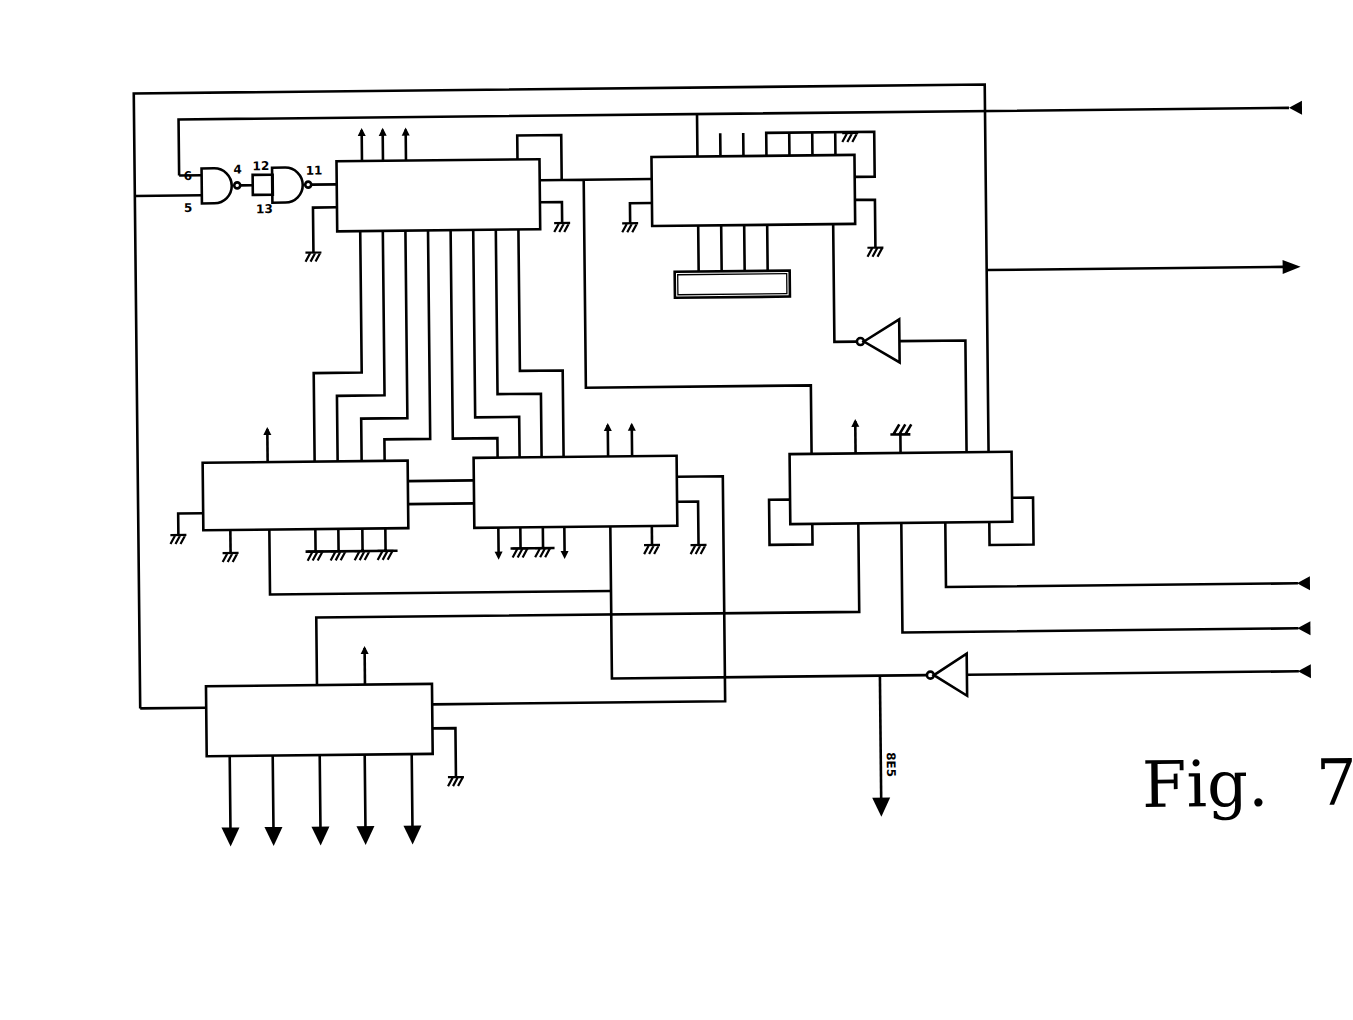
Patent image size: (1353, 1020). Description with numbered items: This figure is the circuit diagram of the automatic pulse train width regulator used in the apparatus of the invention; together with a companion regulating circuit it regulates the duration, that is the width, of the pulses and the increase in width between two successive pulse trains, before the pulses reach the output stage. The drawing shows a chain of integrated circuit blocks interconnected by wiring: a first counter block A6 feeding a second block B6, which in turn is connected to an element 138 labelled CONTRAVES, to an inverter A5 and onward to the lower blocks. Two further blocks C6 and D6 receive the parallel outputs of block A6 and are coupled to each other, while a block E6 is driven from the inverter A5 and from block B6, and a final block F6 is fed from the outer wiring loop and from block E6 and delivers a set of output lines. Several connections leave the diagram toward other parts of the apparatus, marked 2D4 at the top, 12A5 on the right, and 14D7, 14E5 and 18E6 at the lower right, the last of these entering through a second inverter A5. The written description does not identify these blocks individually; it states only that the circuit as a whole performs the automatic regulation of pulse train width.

The CONTRAVES switch unit 138 is at (725, 276).
The counter A6 (CD40103) A6 is at (438, 195).
The counter B6 (CD40103) B6 is at (748, 182).
The counter C6 (CD40193) C6 is at (291, 488).
The counter D6 (CD40193) D6 is at (593, 479).
The counter E6 (CD4518) E6 is at (921, 471).
The decade counter F6 (CD4017) F6 is at (319, 712).
The inverter A5 is at (918, 503).
The connection to 2D4 is at (1244, 101).
The connection to 12A5 is at (1143, 263).
The connection to 14D7 is at (1127, 556).
The connection to 14E5 is at (1105, 579).
The connection to 18E6 - 16F5 18E6 is at (1139, 667).